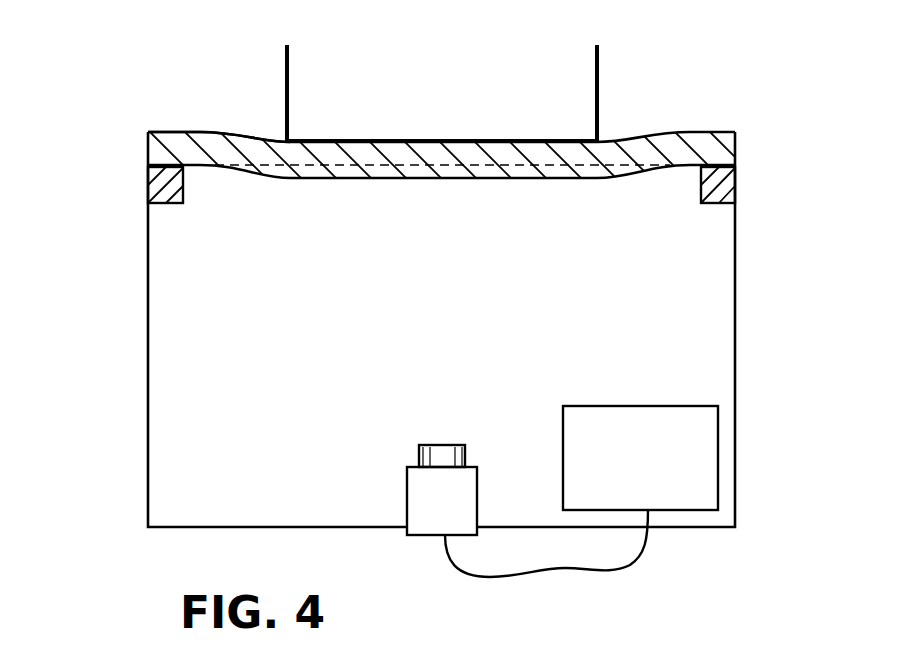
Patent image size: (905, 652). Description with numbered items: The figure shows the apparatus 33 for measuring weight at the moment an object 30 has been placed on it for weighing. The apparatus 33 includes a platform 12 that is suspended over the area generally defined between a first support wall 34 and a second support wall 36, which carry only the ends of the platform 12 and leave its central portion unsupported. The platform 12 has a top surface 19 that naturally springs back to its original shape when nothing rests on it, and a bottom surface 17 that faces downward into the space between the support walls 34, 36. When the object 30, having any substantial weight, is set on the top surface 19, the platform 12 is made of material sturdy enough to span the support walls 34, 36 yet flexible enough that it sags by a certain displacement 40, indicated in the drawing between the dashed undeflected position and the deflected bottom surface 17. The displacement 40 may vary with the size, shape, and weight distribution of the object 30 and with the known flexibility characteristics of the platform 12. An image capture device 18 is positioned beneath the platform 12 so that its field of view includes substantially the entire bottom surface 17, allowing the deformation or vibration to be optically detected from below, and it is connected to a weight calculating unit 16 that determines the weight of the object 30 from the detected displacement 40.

The platform 12 is at (146, 127).
The weight calculating unit 16 is at (628, 405).
The bottom surface 17 is at (347, 180).
The image capture device 18 is at (406, 502).
The top surface 19 is at (203, 131).
The object 30 is at (599, 97).
The apparatus 33 is at (800, 217).
The first support wall 34 is at (165, 205).
The second support wall 36 is at (718, 204).
The displacement 40 is at (442, 235).